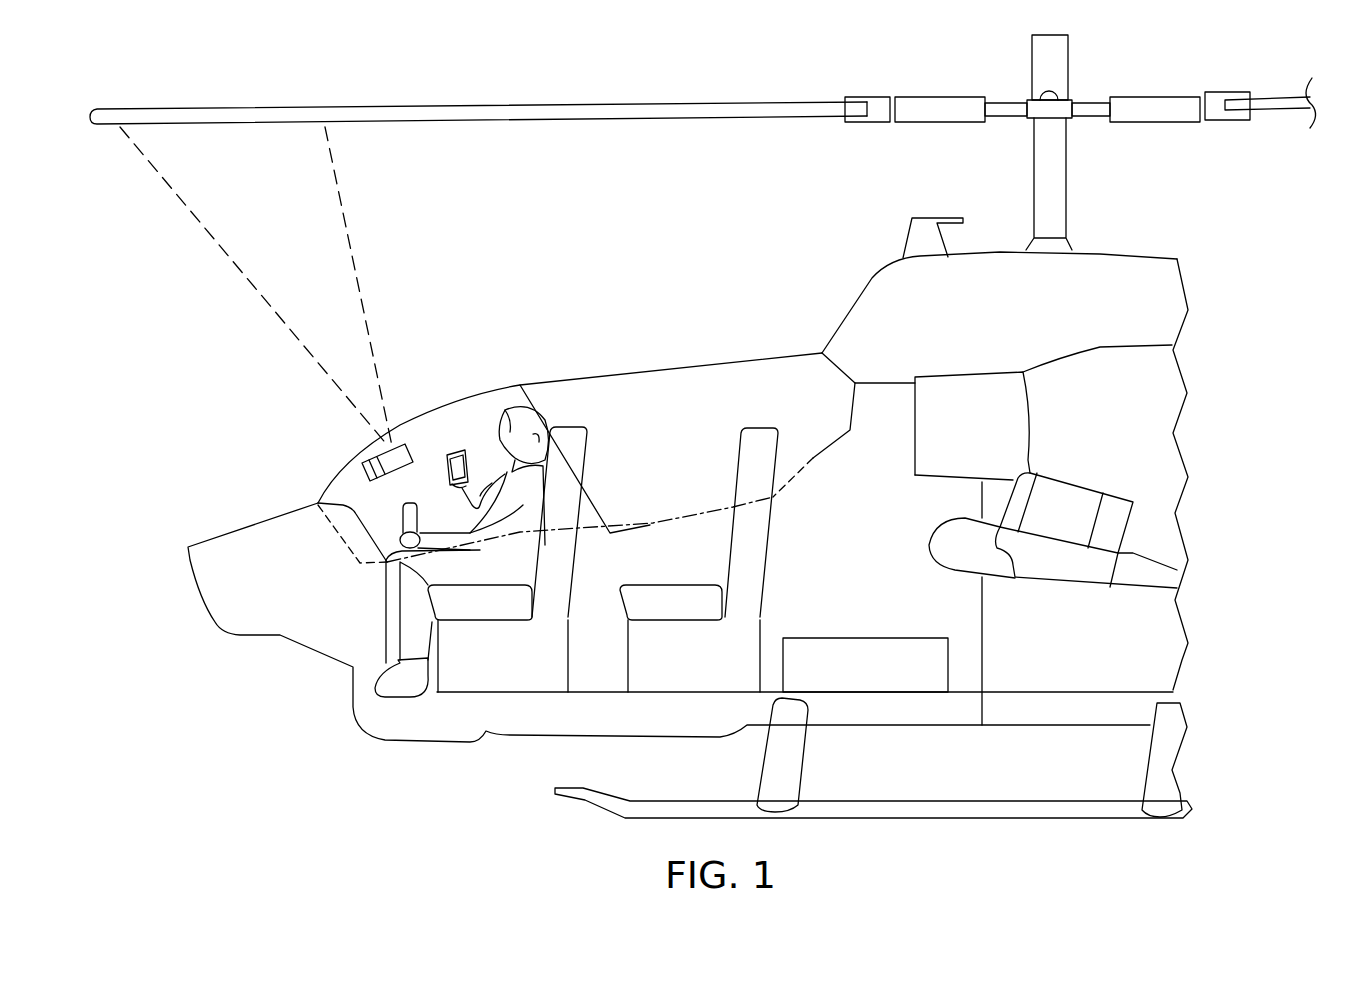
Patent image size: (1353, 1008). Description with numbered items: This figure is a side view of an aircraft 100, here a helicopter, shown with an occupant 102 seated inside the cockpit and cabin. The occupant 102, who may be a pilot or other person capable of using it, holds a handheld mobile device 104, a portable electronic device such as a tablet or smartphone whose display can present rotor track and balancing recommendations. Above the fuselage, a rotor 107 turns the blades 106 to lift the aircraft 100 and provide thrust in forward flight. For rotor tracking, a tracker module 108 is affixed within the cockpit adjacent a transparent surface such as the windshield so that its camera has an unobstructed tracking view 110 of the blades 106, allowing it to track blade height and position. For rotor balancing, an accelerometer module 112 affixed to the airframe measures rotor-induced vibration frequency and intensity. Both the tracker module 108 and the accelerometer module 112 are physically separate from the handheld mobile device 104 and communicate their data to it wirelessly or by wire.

The aircraft 100 is at (228, 735).
The occupant 102 is at (546, 424).
The handheld mobile device 104 is at (460, 452).
The blades 106 is at (533, 106).
The rotor 107 is at (1075, 248).
The tracker module 108 is at (368, 485).
The tracking view 110 is at (339, 185).
The accelerometer module 112 is at (868, 638).